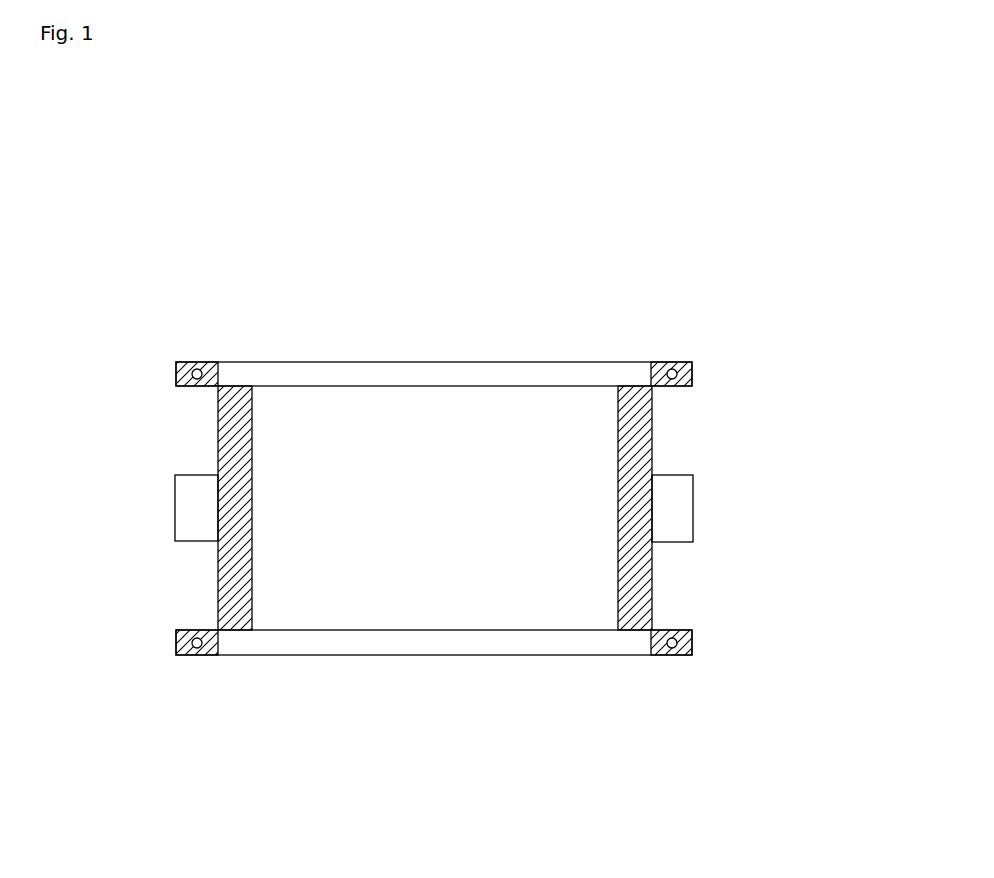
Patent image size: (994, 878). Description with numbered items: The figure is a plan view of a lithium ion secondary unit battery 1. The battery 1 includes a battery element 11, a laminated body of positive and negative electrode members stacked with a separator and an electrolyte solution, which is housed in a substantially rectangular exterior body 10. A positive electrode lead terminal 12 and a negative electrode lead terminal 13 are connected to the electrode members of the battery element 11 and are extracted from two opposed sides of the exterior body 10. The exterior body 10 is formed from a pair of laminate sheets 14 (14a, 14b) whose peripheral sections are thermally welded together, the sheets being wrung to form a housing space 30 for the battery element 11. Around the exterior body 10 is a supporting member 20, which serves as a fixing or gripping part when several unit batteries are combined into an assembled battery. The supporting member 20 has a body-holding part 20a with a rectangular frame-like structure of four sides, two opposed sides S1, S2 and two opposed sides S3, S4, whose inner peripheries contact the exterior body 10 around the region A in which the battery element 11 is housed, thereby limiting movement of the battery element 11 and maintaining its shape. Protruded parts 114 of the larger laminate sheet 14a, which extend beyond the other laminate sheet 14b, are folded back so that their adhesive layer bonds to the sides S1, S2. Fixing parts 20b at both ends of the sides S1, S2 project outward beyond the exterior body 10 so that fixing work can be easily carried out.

The battery 1 is at (614, 301).
The exterior body 10 is at (529, 592).
The battery element 11 is at (501, 411).
The positive electrode lead terminal 12 is at (693, 515).
The negative electrode lead terminal 13 is at (175, 508).
The laminate sheets 14 is at (496, 509).
The laminate sheet 14a is at (262, 373).
The laminate sheet 14b is at (557, 560).
The protruded parts 114 is at (405, 372).
The supporting member 20 is at (662, 417).
The body-holding part 20a is at (652, 610).
The fixing part 20b is at (187, 362).
The housing space 30 is at (551, 411).
The region A is at (288, 602).
The side S1 is at (462, 362).
The side S2 is at (483, 656).
The side S3 is at (655, 468).
The side S4 is at (218, 578).